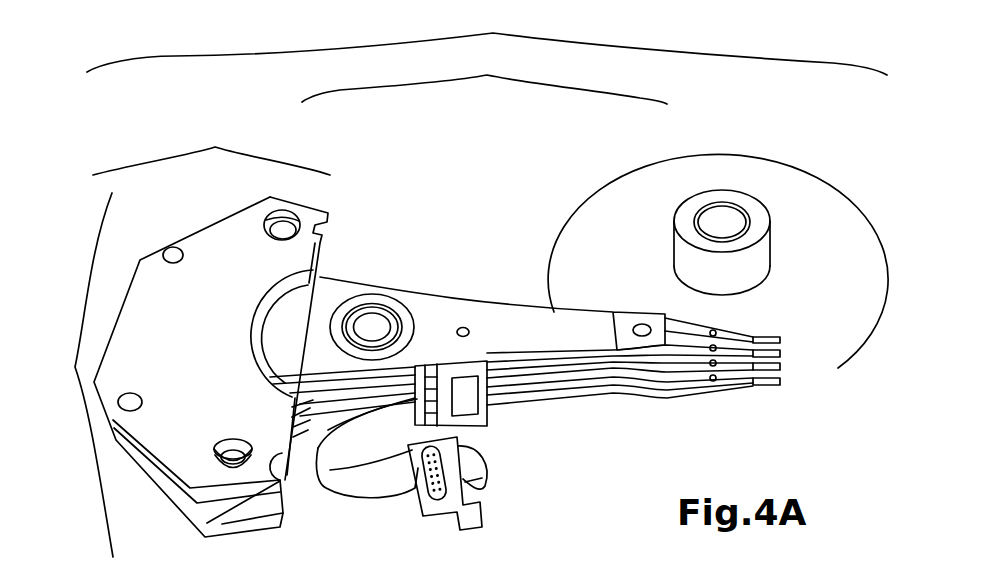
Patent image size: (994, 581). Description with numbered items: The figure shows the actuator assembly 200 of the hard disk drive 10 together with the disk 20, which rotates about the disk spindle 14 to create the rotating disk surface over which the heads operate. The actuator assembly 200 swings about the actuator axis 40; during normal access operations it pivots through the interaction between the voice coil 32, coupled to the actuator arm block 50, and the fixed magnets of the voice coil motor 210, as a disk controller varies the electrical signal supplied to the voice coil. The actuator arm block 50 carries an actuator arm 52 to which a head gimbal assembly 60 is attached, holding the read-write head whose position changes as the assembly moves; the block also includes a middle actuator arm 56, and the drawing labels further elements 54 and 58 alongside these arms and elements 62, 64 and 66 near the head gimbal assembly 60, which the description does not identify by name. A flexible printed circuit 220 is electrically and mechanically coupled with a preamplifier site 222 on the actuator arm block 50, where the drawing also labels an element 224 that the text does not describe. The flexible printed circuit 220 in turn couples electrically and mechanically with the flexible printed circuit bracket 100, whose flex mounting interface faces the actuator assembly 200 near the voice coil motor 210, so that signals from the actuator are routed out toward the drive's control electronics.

The hard disk drive 10 is at (487, 40).
The disk spindle 14 is at (690, 257).
The disk 20 is at (850, 199).
The voice coil 32 is at (285, 342).
The actuator axis 40 is at (374, 322).
The actuator arm block 50 is at (484, 75).
The actuator arm 52 is at (558, 318).
The head suspension assembly 54 is at (630, 362).
The middle actuator arm 56 is at (603, 377).
The head suspension assembly 58 is at (588, 392).
The head gimbal assembly 60 is at (753, 337).
The head slider 62 is at (783, 351).
The head slider 64 is at (782, 367).
The head slider 66 is at (740, 378).
The flexible printed circuit bracket 100 is at (470, 517).
The actuator assembly 200 is at (70, 375).
The voice coil motor 210 is at (211, 328).
The flexible printed circuit 220 is at (362, 493).
The preamplifier site 222 is at (483, 420).
The preamplifier chip 224 is at (458, 382).